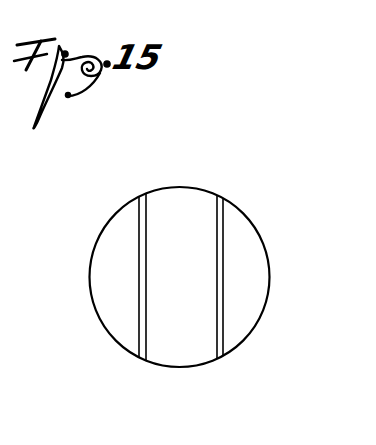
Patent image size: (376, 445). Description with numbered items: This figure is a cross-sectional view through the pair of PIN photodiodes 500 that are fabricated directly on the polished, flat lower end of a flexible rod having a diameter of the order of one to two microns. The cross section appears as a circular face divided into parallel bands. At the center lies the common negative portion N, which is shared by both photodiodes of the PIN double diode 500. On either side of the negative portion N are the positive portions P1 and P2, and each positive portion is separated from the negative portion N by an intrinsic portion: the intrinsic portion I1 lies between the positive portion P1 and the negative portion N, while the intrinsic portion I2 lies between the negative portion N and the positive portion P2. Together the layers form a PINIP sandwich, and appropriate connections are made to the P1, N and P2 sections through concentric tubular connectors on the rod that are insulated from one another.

The pair of PIN photodiodes 500 is at (177, 351).
The intrinsic portion I1 is at (146, 196).
The intrinsic portion I2 is at (223, 200).
The positive portion P1 is at (117, 277).
The negative portion N is at (181, 277).
The positive portion P2 is at (244, 277).